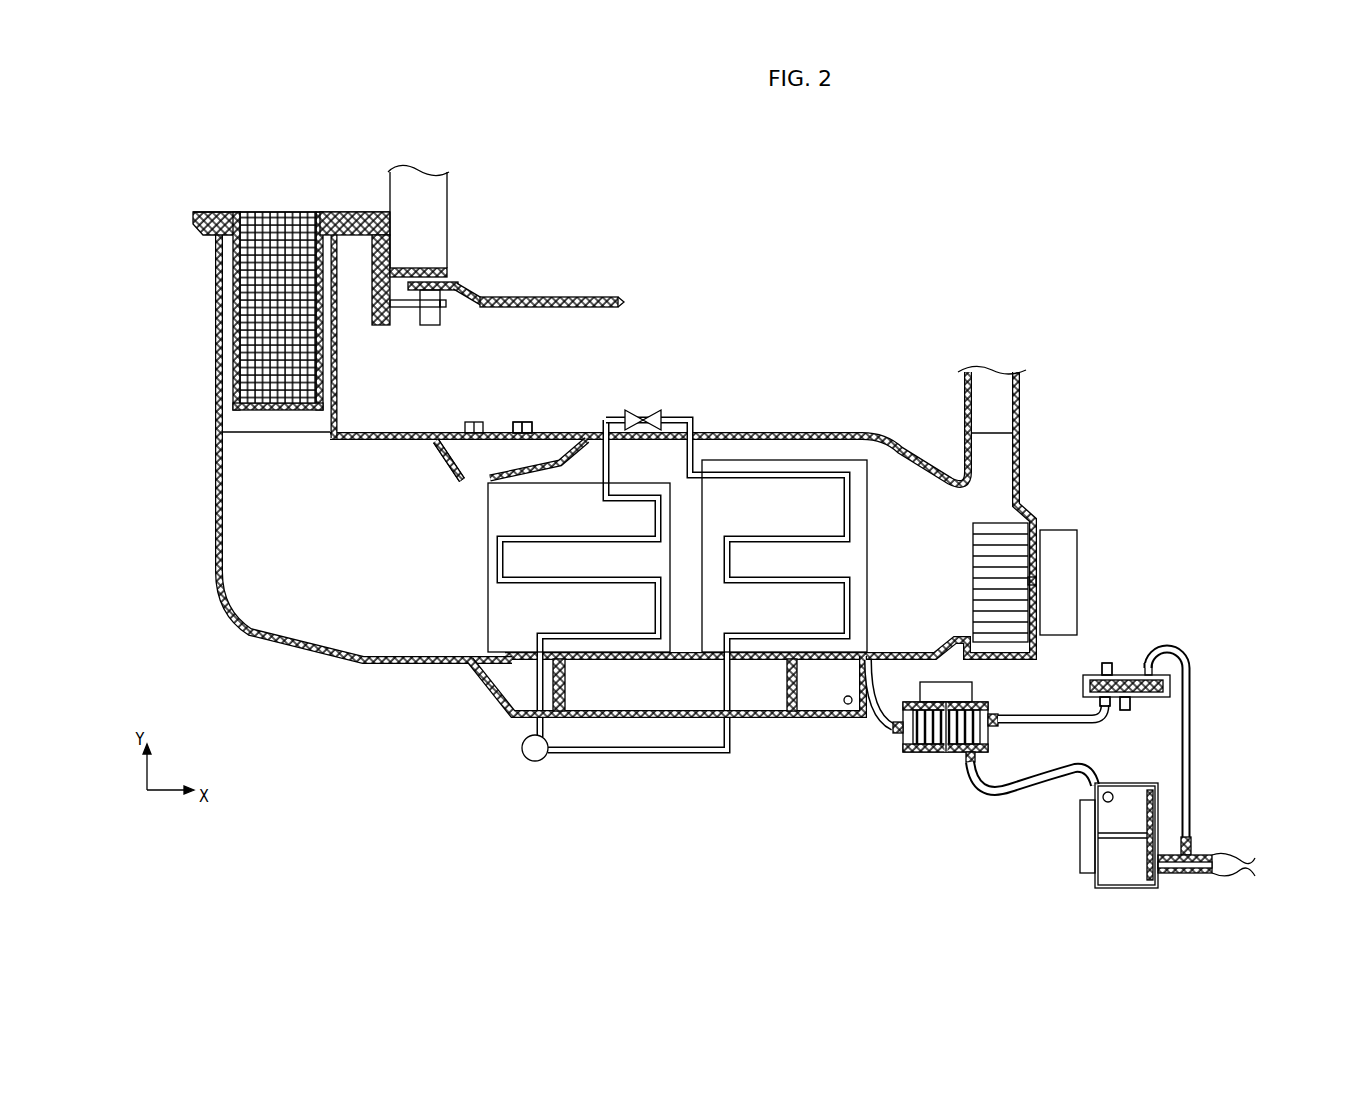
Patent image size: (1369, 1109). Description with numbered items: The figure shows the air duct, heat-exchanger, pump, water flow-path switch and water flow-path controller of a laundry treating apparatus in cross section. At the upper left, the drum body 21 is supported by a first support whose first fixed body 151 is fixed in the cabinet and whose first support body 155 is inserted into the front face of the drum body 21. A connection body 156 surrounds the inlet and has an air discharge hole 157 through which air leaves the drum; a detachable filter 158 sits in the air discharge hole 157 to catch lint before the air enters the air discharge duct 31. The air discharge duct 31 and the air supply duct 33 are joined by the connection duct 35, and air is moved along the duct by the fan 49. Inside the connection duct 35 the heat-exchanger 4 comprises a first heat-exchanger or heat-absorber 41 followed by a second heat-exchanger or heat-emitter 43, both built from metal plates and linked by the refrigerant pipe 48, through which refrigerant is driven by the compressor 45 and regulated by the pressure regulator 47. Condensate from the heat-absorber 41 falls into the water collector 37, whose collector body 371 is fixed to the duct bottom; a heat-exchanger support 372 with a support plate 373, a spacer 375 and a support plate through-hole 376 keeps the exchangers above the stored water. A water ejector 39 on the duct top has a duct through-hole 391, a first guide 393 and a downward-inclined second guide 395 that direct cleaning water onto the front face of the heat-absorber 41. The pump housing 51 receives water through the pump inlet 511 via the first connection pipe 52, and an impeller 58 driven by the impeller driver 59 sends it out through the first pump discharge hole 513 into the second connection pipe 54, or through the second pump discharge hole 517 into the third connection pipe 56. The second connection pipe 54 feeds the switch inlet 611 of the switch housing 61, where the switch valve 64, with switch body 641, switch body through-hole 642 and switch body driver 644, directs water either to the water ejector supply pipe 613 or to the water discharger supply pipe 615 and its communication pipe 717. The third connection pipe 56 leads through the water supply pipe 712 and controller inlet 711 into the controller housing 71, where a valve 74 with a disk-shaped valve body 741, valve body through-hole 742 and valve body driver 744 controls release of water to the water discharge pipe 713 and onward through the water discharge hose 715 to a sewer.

The air discharge duct 31 is at (215, 402).
The connection duct 35 is at (215, 497).
The filter 158 is at (222, 330).
The connection body 156 is at (222, 213).
The air discharge hole 157 is at (325, 213).
The first fixed body 151 is at (372, 272).
The first support body 155 is at (447, 275).
The drum body 21 is at (620, 298).
The water ejector 39 is at (568, 230).
The second guide 395 is at (455, 460).
The first guide 393 is at (508, 470).
The duct through-hole 391 is at (522, 422).
The water ejector supply pipe 613 is at (562, 425).
The pressure regulator 47 is at (656, 411).
The first heat-exchanger (heat-absorber) 41 is at (596, 620).
The second heat-exchanger (heat-emitter) 43 is at (727, 607).
The compressor 45 is at (548, 760).
The refrigerant pipe 48 is at (650, 753).
The heat-exchanger 4 is at (680, 824).
The heat-exchanger support 372 is at (545, 690).
The collector body 371 is at (470, 678).
The water collector 37 is at (503, 685).
The support plate 373 is at (745, 690).
The support plate through-hole 376 is at (760, 690).
The spacer 375 is at (793, 697).
The air supply duct 33 is at (1016, 410).
The fan 49 is at (1022, 522).
The pump housing 51 is at (925, 752).
The pump inlet 511 is at (908, 742).
The impeller driver 59 is at (962, 722).
The impeller 58 is at (920, 698).
The first connection pipe 52 is at (890, 727).
The first pump discharge hole 513 is at (997, 715).
The second connection pipe 54 is at (1050, 713).
The second pump discharge hole 517 is at (966, 758).
The third connection pipe 56 is at (975, 778).
The water supply pipe 712 is at (1078, 785).
The switch housing 61 is at (1172, 688).
The switch body through-hole 642 is at (1097, 672).
The switch inlet 611 is at (1106, 703).
The switch body driver 644 is at (1130, 706).
The switch body 641 is at (1166, 697).
The switch valve 64 is at (1300, 712).
The water discharger supply pipe 615 is at (1178, 650).
The communication pipe 717 is at (1192, 843).
The water discharge hose 715 is at (1212, 862).
The water discharge pipe 713 is at (1190, 875).
The controller housing 71 is at (1157, 888).
The controller inlet 711 is at (1111, 794).
The valve body 741 is at (1148, 862).
The valve body through-hole 742 is at (1100, 888).
The valve body driver 744 is at (1082, 870).
The valve 74 is at (1150, 949).